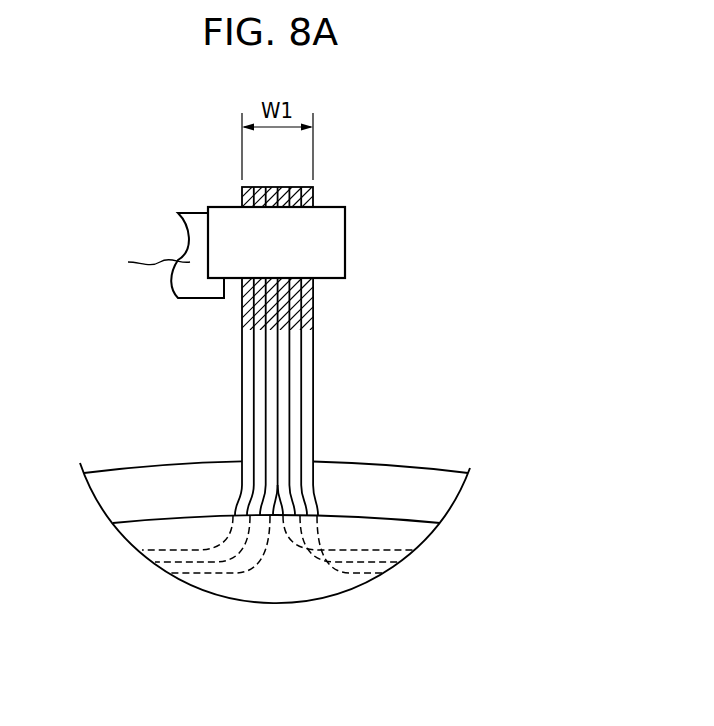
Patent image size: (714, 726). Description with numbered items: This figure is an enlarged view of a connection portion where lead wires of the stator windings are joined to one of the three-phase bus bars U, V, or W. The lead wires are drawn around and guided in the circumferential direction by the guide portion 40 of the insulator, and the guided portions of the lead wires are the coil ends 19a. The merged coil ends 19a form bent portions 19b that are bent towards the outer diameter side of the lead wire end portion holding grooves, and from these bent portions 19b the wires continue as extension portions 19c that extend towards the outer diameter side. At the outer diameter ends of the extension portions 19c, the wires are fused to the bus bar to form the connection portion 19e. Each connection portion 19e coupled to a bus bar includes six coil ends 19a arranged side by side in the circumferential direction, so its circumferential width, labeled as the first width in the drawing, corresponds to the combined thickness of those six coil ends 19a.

The coil ends 19a is at (249, 342).
The bent portions 19b is at (318, 512).
The extension portions 19c is at (313, 362).
The connection portions 19e is at (313, 197).
The guide portion 40 is at (168, 518).